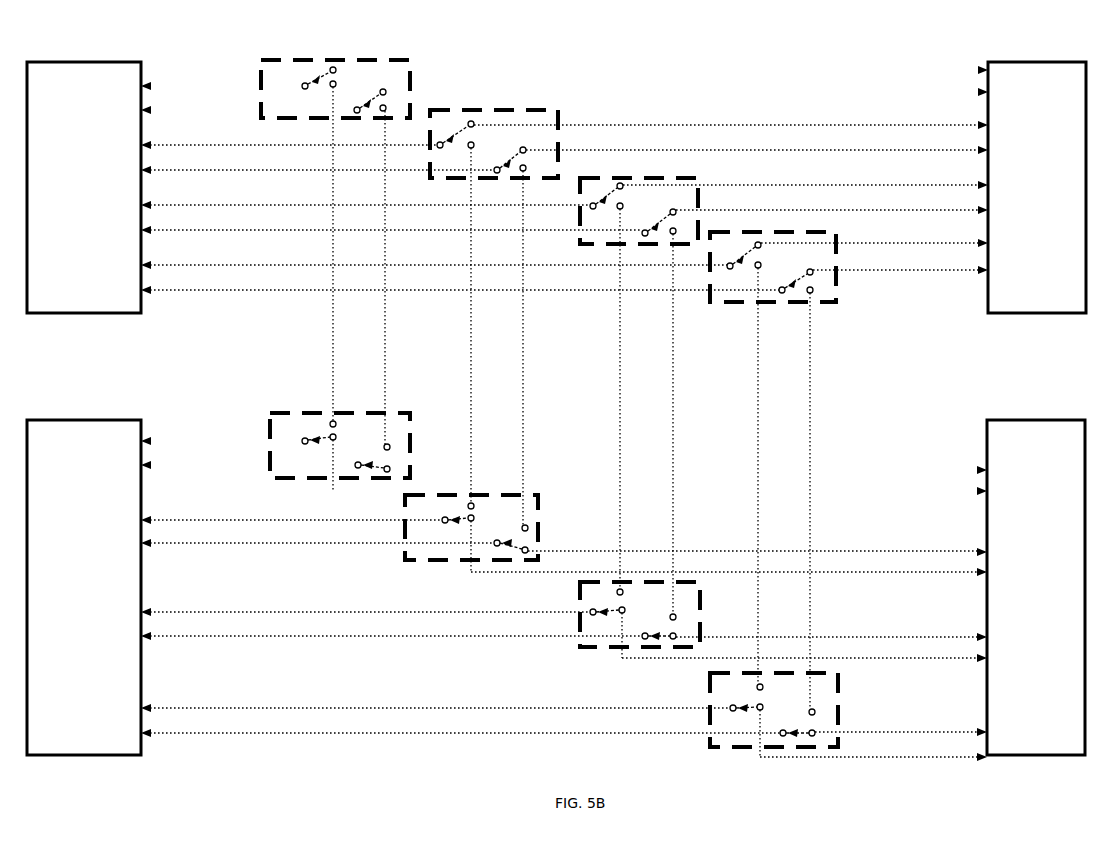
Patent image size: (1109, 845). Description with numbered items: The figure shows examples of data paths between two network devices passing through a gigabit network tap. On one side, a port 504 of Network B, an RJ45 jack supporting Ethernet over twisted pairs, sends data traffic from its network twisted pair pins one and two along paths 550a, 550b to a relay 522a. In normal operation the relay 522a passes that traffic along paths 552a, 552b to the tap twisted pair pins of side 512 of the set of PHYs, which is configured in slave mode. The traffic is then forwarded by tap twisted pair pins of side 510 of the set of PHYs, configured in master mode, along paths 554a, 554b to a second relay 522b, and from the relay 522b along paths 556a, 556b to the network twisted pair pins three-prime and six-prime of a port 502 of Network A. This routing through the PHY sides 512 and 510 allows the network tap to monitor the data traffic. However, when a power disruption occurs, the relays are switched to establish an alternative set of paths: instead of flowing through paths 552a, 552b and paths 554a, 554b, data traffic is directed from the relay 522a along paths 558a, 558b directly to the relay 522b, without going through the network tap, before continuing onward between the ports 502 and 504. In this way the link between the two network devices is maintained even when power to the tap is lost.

The side of set of PHYs 512 is at (89, 166).
The side of set of PHYs 510 is at (89, 567).
The port 504 is at (1022, 184).
The port 502 is at (1021, 590).
The relay 522a is at (335, 89).
The relay 522b is at (340, 445).
The path 552a is at (302, 86).
The path 552b is at (354, 110).
The path 554a is at (302, 441).
The path 554b is at (355, 465).
The path 550a is at (336, 70).
The path 550b is at (386, 92).
The path 556a is at (390, 469).
The path 556b is at (333, 491).
The path 558a is at (329, 254).
The path 558b is at (395, 277).